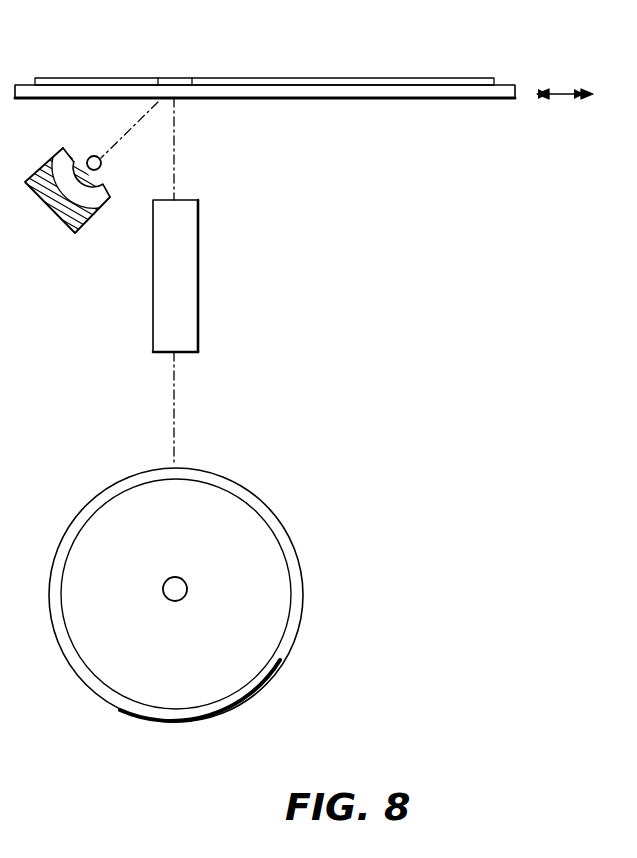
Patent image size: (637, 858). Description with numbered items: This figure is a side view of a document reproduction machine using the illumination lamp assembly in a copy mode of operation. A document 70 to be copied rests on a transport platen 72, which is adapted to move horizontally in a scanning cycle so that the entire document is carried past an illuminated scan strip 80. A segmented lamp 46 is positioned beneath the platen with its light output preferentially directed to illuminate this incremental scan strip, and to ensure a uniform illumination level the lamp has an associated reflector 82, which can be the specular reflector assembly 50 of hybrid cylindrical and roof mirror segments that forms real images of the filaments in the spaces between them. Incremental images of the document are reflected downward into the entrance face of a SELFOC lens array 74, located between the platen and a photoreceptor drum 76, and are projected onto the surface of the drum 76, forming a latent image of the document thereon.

The segmented filament lamp 46 is at (89, 157).
The specular reflector assembly 50 is at (61, 234).
The document 70 is at (300, 78).
The transport platen 72 is at (400, 98).
The SELFOC lens array 74 is at (192, 286).
The photoreceptor drum 76 is at (258, 497).
The illuminated scan strip 80 is at (172, 78).
The reflector 82 is at (95, 218).